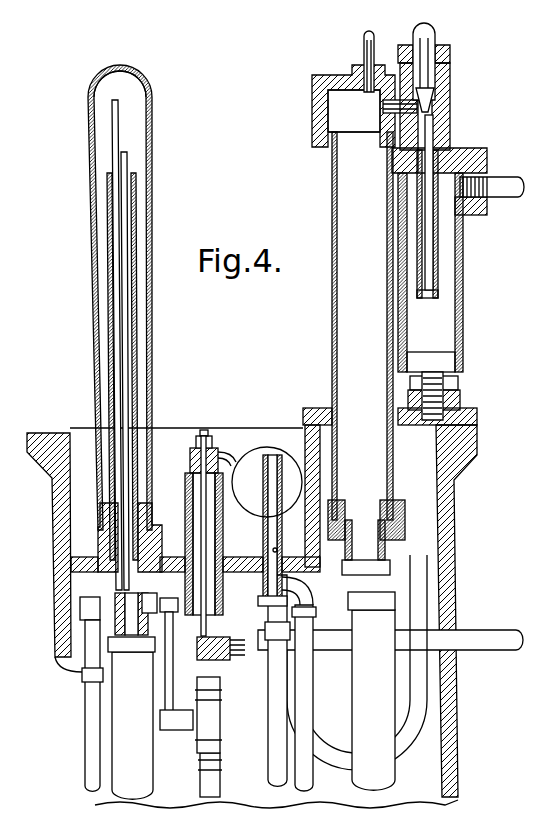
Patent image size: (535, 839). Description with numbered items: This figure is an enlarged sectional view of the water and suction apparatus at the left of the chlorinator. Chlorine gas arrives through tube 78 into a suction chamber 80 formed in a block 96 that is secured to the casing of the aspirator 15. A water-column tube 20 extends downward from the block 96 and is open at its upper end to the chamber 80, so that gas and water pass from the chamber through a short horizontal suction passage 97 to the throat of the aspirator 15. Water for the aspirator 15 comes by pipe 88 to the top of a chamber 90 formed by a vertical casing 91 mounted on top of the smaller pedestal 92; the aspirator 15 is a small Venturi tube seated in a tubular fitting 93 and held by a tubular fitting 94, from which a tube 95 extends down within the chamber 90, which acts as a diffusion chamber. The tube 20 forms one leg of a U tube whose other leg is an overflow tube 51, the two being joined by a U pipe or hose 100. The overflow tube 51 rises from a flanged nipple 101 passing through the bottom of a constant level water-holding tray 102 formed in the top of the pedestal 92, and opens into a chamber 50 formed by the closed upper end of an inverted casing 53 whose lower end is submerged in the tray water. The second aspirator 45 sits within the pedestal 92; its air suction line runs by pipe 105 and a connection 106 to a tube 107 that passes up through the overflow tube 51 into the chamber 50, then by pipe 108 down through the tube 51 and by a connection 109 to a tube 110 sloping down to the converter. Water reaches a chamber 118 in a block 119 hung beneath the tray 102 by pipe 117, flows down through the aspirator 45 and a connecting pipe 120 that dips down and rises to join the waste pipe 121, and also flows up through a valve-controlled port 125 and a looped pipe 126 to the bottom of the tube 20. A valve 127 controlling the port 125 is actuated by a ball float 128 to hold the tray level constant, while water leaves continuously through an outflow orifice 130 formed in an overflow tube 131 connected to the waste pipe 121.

The aspirator 15 is at (446, 96).
The water-column tube 20 is at (331, 212).
The aspirator 45 is at (220, 726).
The suction chamber 50 is at (110, 88).
The overflow tube 51 is at (110, 286).
The inverted tube or casing 53 is at (93, 226).
The tube 78 is at (363, 46).
The suction chamber 80 is at (330, 112).
The pipe 88 is at (506, 178).
The chamber 90 is at (440, 252).
The vertical casing or tube 91 is at (460, 304).
The pedestal 92 is at (458, 720).
The tubular fitting 93 is at (450, 126).
The tubular fitting 94 is at (436, 40).
The tube 95 is at (438, 280).
The block 96 is at (312, 86).
The suction passage 97 is at (383, 106).
The U pipe or hose 100 is at (383, 760).
The flanged nipple 101 is at (98, 543).
The constant level water-holding tray or box 102 is at (82, 437).
The pipe 105 is at (172, 688).
The connection 106 is at (152, 640).
The tube 107 is at (130, 392).
The pipe 108 is at (113, 143).
The connection 109 is at (85, 619).
The tube 110 is at (92, 706).
The pipe 117 is at (336, 640).
The chamber 118 is at (212, 658).
The block 119 is at (284, 588).
The connecting pipe 120 is at (288, 720).
The waste pipe 121 is at (298, 738).
The valve-controlled port 125 is at (182, 652).
The pipe 126 is at (420, 680).
The valve 127 is at (160, 645).
The ball float 128 is at (262, 448).
The outflow orifice 130 is at (272, 550).
The overflow tube 131 is at (262, 506).